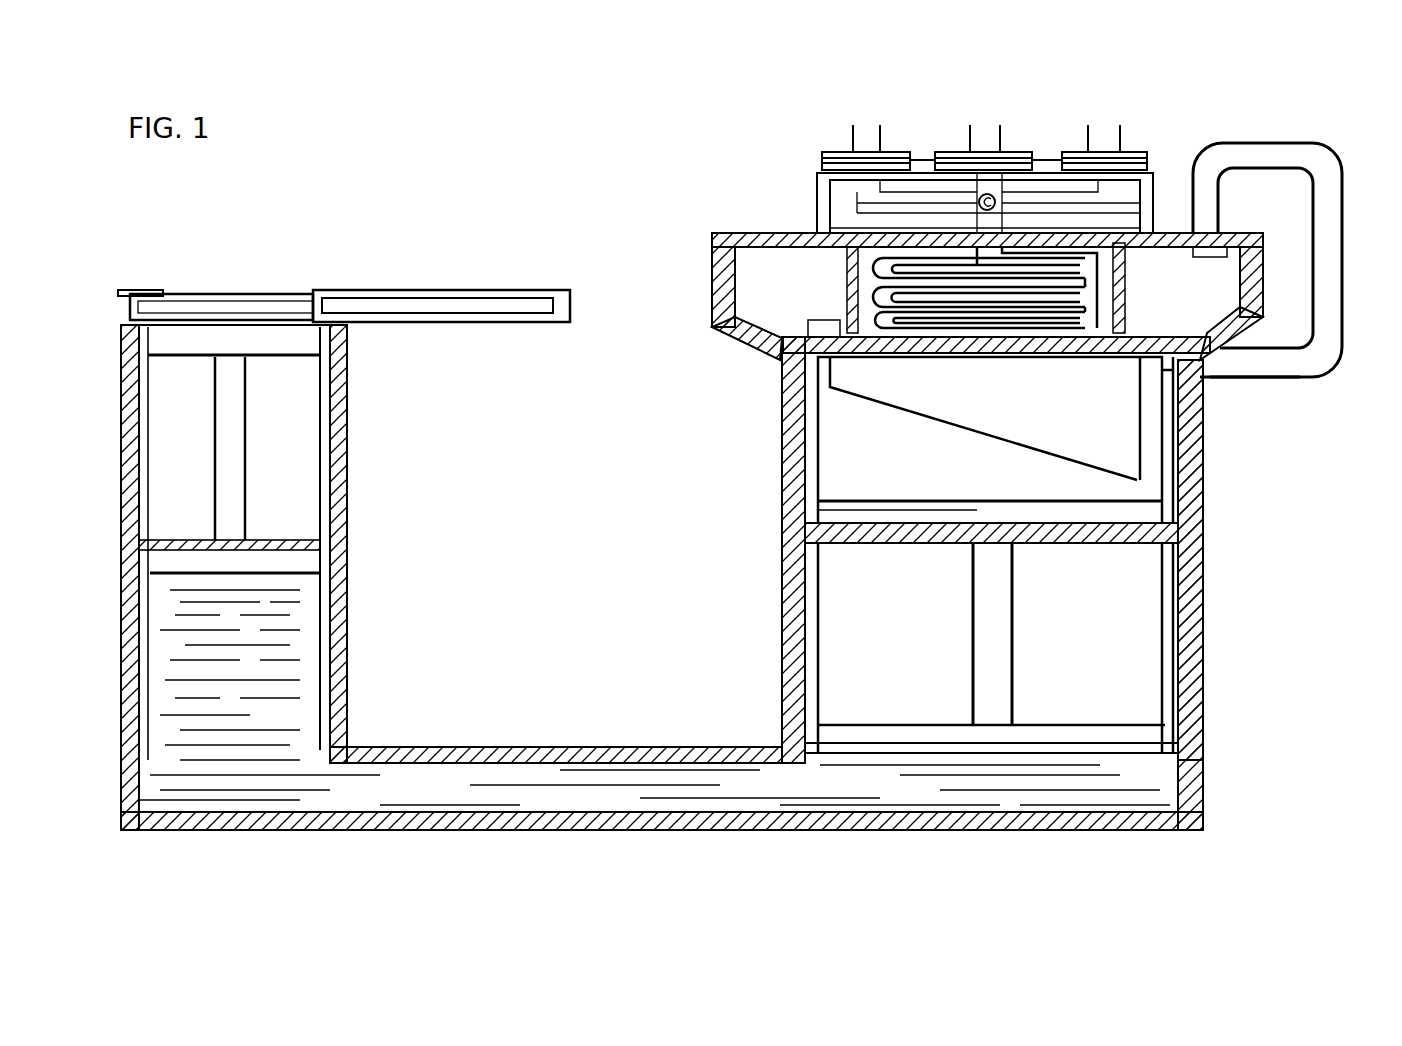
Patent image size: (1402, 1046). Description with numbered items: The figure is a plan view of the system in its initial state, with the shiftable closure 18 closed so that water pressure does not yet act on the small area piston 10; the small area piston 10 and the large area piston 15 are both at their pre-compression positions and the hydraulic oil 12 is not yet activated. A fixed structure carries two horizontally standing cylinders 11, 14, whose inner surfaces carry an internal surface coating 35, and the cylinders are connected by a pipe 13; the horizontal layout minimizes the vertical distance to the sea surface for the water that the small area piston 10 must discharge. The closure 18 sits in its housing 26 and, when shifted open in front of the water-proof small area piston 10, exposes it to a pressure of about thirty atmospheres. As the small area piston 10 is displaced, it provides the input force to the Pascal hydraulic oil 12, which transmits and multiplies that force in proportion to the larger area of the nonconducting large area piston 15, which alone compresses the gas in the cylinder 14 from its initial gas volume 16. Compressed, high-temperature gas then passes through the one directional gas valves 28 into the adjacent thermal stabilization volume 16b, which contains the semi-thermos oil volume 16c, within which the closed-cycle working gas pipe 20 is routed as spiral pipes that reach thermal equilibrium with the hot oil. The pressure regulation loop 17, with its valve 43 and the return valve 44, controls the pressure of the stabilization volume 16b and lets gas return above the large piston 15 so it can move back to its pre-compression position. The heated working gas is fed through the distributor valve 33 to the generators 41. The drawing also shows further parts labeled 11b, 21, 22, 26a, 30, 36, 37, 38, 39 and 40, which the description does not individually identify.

The small area piston 10 is at (237, 337).
The cylinder 11 is at (347, 720).
The lower housing portion 11b is at (712, 307).
The hydraulic oil 12 is at (460, 780).
The pipe 13 is at (619, 812).
The cylinder 14 is at (798, 660).
The large area piston 15 is at (913, 738).
The initial gas volume 16 is at (937, 443).
The thermal stabilization volume 16b is at (712, 292).
The oil volume 16c is at (760, 233).
The pressure regulation loop 17 is at (1227, 363).
The shiftable closure 18 is at (230, 303).
The working gas pipe 20 is at (1110, 267).
The housing 21 is at (828, 186).
The terminal pin 22 is at (1125, 130).
The housing 26 is at (466, 308).
The lid lip 26a is at (125, 290).
The one directional gas valves 28 is at (1140, 481).
The channel 30 is at (887, 203).
The distributor valve 33 is at (1117, 200).
The internal surface coating 35 is at (782, 483).
The electrodes 36 is at (230, 393).
The electrodes 37 is at (990, 613).
The shelf 38 is at (140, 543).
The separator plate 39 is at (1165, 533).
The pipe 40 is at (1337, 338).
The generators 41 is at (827, 162).
The valve 43 is at (1227, 252).
The valve 44 is at (1203, 413).